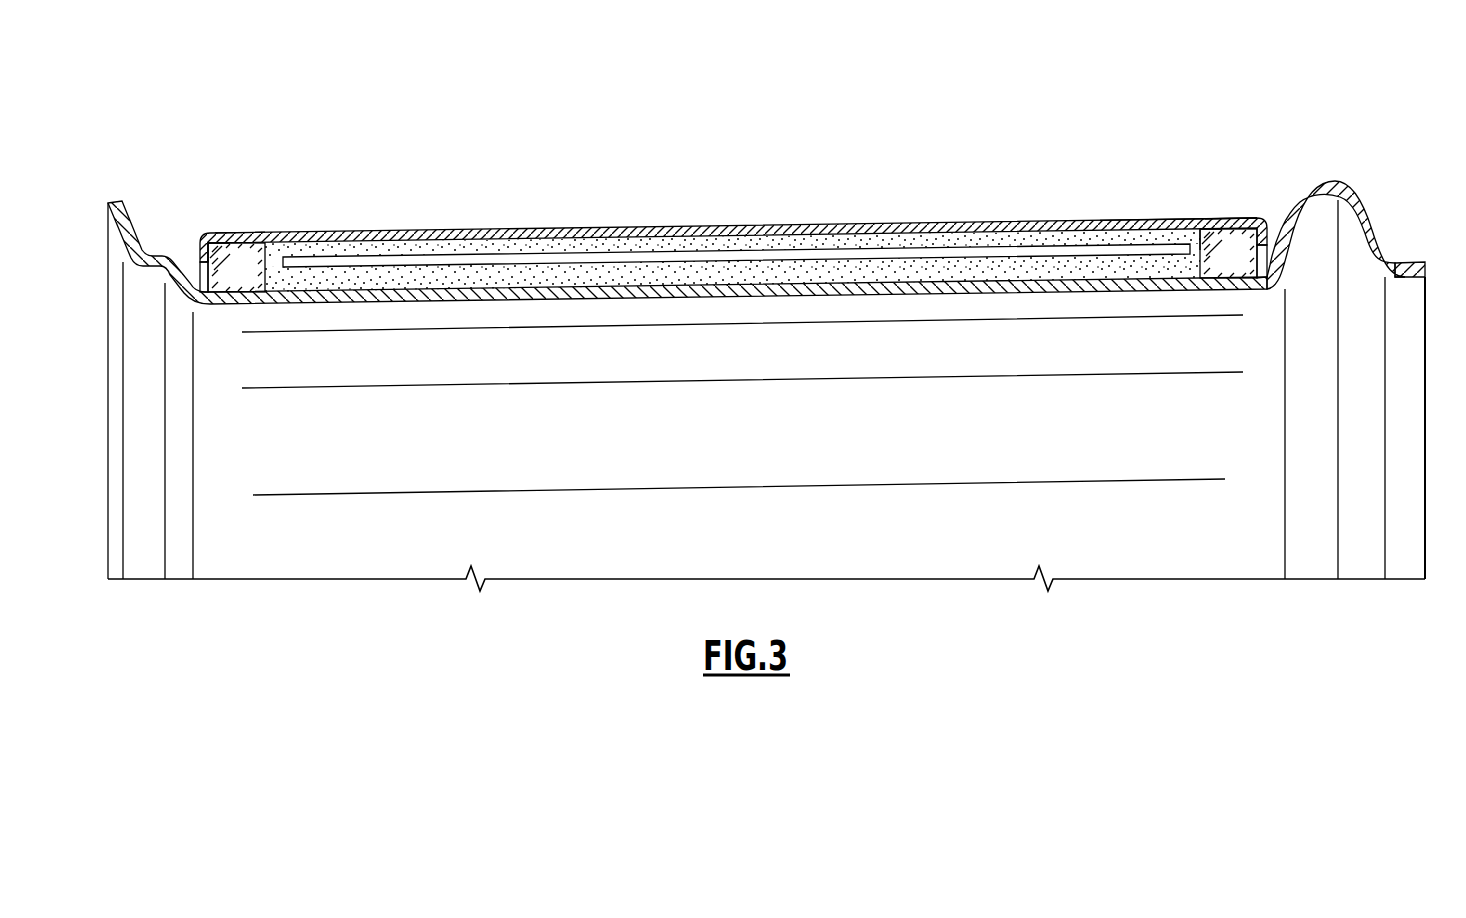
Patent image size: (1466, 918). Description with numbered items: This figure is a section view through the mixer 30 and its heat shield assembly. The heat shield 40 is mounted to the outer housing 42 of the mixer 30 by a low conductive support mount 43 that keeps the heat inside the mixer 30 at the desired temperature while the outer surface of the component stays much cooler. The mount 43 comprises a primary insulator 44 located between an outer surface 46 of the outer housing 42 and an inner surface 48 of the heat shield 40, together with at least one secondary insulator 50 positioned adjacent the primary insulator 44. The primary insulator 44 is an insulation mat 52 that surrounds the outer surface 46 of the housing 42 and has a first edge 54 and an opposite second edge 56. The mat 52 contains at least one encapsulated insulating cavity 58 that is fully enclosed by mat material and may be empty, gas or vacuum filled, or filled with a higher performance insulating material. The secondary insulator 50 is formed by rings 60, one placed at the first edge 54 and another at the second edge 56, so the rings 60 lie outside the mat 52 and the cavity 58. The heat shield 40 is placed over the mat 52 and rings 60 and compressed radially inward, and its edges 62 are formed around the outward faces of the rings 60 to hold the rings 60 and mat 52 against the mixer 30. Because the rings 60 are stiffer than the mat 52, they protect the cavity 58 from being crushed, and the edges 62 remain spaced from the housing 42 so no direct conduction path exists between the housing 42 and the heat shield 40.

The mixer 30 is at (203, 104).
The heat shield 40 is at (552, 227).
The outer housing 42 is at (1412, 262).
The low conductive support mount 43 is at (1296, 216).
The primary insulator 44 is at (1163, 226).
The outer surface 46 is at (198, 265).
The inner surface 48 is at (715, 243).
The secondary insulator 50 is at (240, 230).
The insulation mat 52 is at (847, 250).
The first edge 54 is at (243, 250).
The second edge 56 is at (1207, 229).
The encapsulated insulating cavity 58 is at (452, 258).
The ring 60 is at (248, 285).
The edges 62 is at (200, 242).